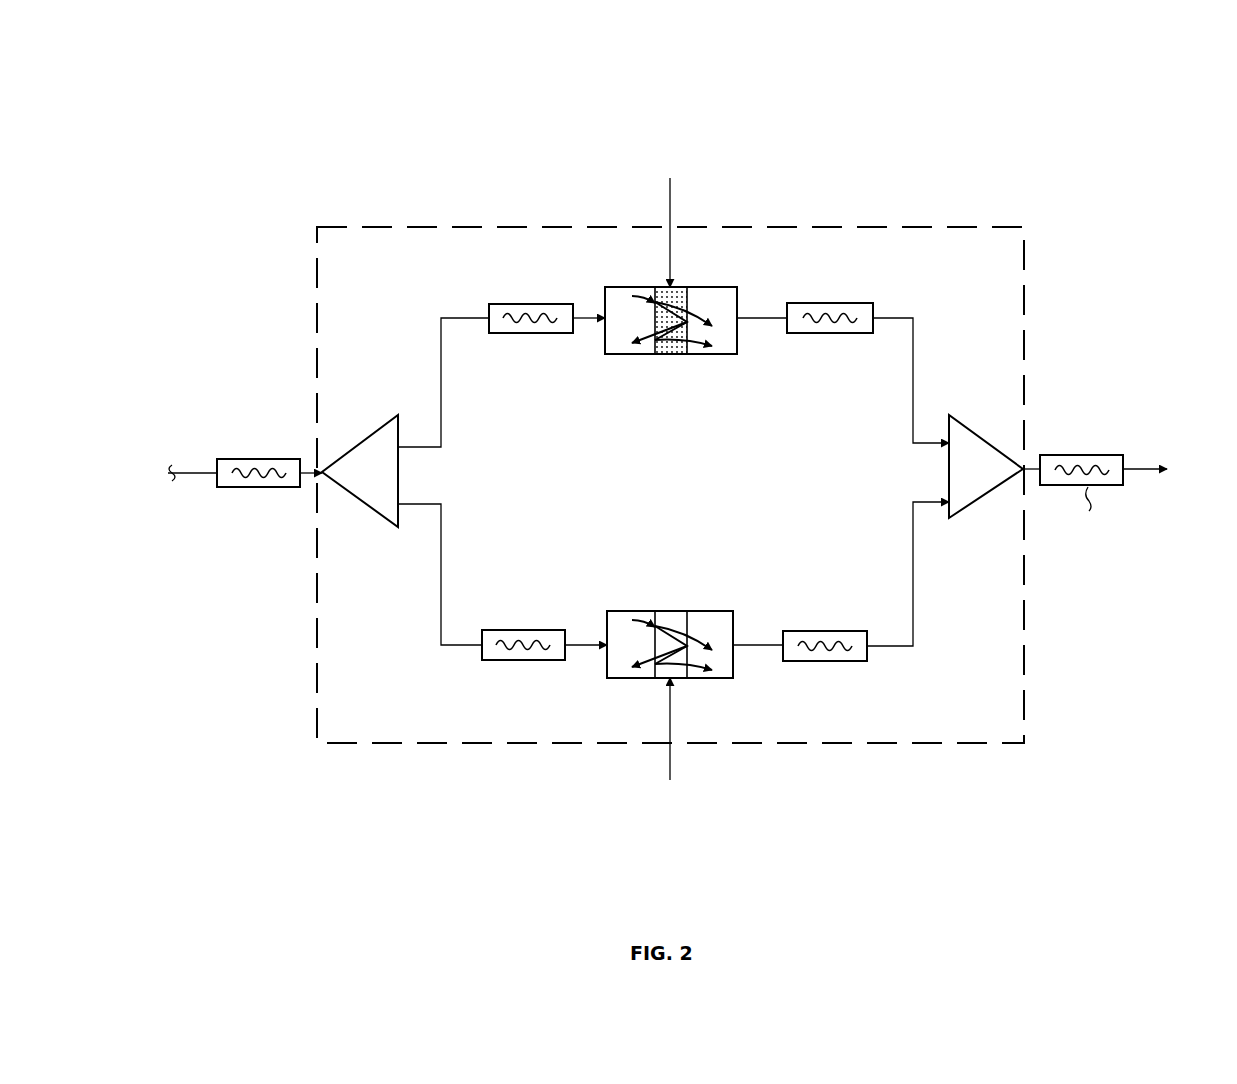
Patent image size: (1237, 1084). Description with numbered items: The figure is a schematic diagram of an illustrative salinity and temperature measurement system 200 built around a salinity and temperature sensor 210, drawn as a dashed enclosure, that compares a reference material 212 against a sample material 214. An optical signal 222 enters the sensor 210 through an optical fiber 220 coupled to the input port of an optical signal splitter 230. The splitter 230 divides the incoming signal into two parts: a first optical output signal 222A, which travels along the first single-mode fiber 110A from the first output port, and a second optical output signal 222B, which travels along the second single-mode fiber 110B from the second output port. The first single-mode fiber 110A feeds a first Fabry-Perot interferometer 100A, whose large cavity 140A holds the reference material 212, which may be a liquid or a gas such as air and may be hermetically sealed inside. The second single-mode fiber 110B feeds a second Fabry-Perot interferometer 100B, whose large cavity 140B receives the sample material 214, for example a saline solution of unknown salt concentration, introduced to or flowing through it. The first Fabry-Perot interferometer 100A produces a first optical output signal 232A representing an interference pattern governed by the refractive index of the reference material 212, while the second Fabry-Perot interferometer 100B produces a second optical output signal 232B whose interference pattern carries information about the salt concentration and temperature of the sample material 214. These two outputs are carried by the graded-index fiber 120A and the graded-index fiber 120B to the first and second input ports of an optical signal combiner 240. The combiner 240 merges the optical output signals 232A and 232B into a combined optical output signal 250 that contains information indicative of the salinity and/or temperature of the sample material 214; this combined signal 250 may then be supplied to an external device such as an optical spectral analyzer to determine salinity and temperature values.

The salinity and temperature measurement system 200 is at (1159, 70).
The salinity and temperature sensor 210 is at (839, 224).
The reference material 212 is at (663, 759).
The sample material 214 is at (674, 206).
The optical fiber 220 is at (193, 473).
The optical signal 222 is at (258, 490).
The first optical output signal 222A is at (522, 661).
The second optical output signal 222B is at (502, 314).
The optical signal splitter 230 is at (358, 500).
The optical signal combiner 240 is at (978, 502).
The combined optical output signal 250 is at (1135, 466).
The first single-mode fiber 110A is at (441, 579).
The second single-mode fiber 110B is at (441, 399).
The graded-index fiber 120A is at (913, 560).
The graded-index fiber 120B is at (913, 365).
The first Fabry-Perot interferometer 100A is at (682, 615).
The second Fabry-Perot interferometer 100B is at (682, 351).
The large cavity 140A is at (671, 612).
The large cavity 140B is at (672, 356).
The first optical output signal 232A is at (825, 663).
The second optical output signal 232B is at (829, 304).